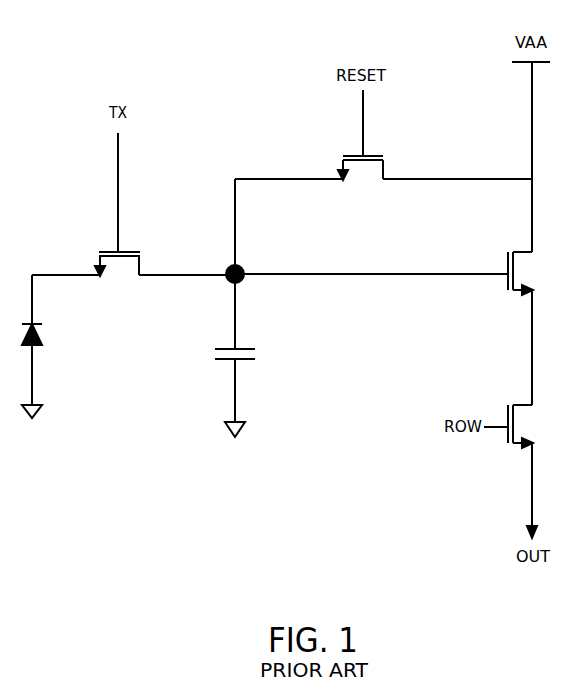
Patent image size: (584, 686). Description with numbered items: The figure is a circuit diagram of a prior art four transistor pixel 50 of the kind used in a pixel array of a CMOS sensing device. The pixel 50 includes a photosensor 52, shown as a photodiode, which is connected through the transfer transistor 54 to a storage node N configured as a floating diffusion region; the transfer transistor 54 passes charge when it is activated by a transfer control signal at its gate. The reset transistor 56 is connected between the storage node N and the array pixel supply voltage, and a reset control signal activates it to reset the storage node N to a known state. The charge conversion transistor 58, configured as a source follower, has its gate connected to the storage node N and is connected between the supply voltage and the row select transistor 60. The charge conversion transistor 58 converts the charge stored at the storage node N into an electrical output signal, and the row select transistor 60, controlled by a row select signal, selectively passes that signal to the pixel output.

The four transistor pixel 50 is at (44, 64).
The photosensor 52 is at (31, 323).
The transfer transistor 54 is at (108, 251).
The reset transistor 56 is at (357, 155).
The charge conversion transistor 58 is at (522, 250).
The row select transistor 60 is at (523, 403).
The storage node N is at (240, 282).